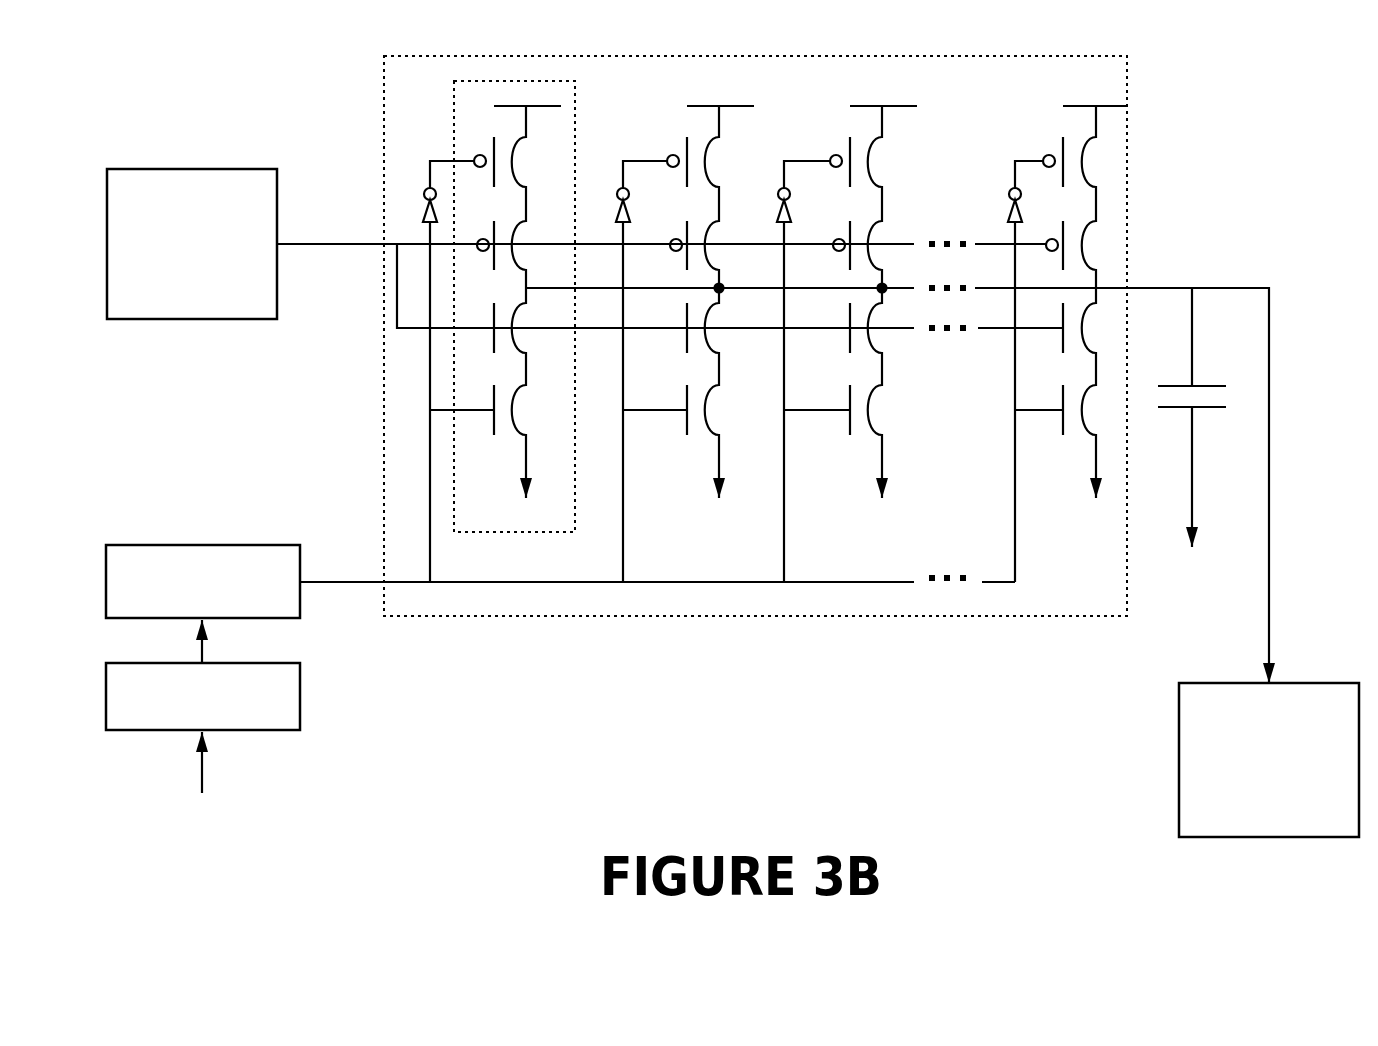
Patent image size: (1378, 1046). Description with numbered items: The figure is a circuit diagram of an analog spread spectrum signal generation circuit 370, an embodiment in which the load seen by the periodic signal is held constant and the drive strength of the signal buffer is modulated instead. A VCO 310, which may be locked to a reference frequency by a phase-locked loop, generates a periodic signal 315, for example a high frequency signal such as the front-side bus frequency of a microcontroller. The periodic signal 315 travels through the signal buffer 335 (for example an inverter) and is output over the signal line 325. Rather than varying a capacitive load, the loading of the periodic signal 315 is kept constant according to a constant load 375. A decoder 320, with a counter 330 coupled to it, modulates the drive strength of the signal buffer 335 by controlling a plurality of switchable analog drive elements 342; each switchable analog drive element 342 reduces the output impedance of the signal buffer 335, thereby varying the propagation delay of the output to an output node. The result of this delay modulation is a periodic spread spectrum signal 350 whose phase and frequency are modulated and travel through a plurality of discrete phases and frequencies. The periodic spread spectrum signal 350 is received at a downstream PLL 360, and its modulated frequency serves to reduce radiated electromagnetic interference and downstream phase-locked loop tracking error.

The analog spread spectrum signal generation circuit 370 is at (182, 52).
The VCO 310 is at (172, 306).
The periodic signal 315 is at (280, 240).
The signal line 325 is at (335, 248).
The decoder 320 is at (185, 602).
The counter 330 is at (185, 721).
The signal buffer 335 is at (657, 82).
The switchable analog drive element 342 is at (503, 526).
The periodic spread spectrum signal 350 is at (1247, 288).
The constant load 375 is at (1168, 517).
The downstream PLL 360 is at (1287, 824).